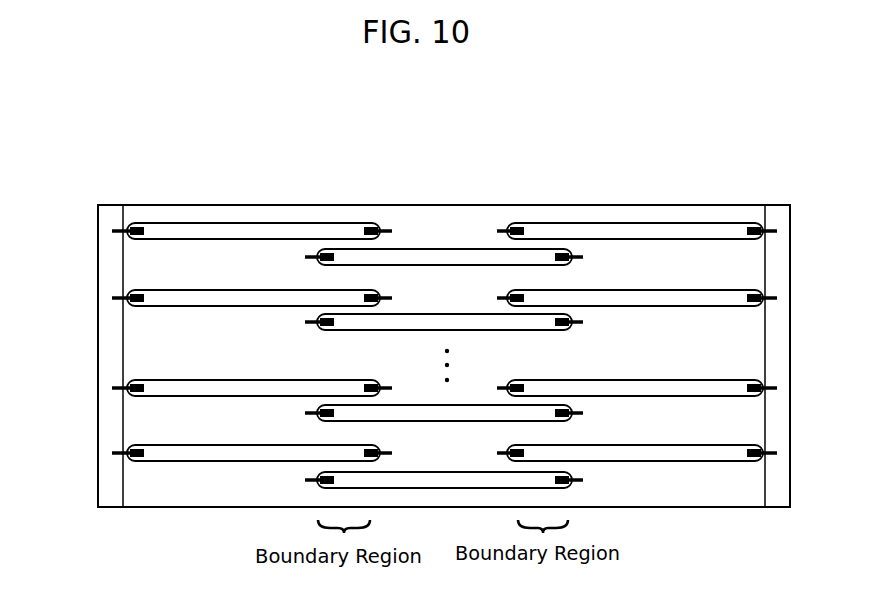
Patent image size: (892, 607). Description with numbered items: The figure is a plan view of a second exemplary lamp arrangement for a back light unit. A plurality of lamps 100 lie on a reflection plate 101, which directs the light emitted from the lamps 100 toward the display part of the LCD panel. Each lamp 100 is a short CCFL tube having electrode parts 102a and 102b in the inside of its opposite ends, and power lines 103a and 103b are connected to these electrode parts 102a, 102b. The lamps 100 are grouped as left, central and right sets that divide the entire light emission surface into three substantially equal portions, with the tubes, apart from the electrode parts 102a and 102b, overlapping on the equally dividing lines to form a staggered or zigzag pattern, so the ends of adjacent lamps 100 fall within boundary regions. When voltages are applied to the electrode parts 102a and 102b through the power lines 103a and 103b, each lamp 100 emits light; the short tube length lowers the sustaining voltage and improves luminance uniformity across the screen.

The lamp 100 is at (232, 218).
The reflection plate 101 is at (473, 216).
The electrode part 102a is at (136, 238).
The electrode part 102b is at (365, 228).
The power line 103a is at (112, 231).
The power line 103b is at (390, 229).